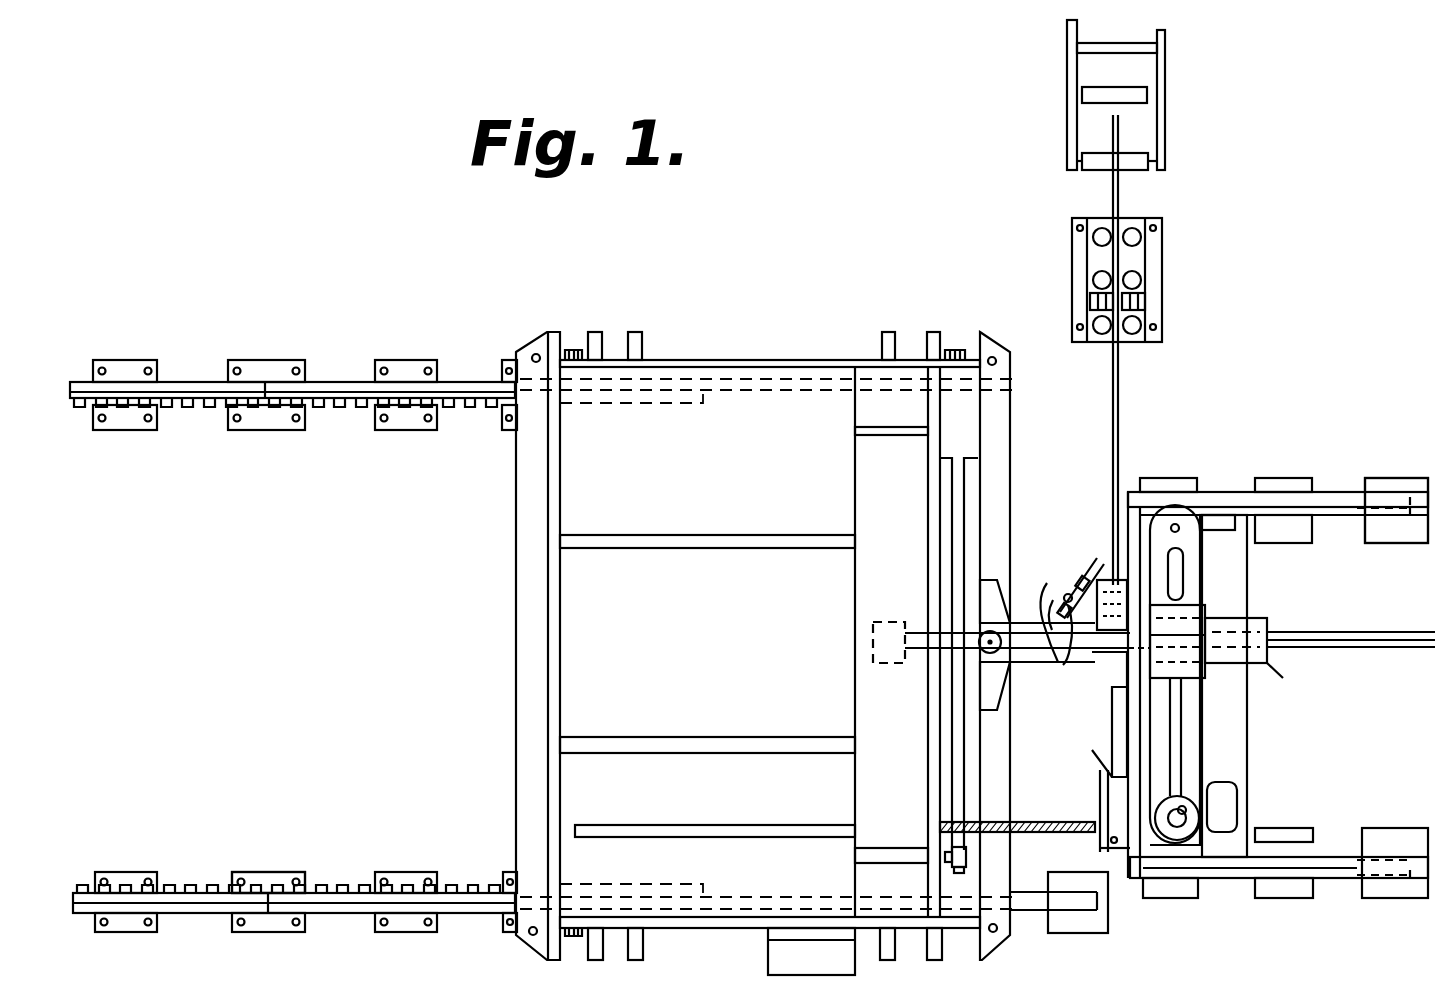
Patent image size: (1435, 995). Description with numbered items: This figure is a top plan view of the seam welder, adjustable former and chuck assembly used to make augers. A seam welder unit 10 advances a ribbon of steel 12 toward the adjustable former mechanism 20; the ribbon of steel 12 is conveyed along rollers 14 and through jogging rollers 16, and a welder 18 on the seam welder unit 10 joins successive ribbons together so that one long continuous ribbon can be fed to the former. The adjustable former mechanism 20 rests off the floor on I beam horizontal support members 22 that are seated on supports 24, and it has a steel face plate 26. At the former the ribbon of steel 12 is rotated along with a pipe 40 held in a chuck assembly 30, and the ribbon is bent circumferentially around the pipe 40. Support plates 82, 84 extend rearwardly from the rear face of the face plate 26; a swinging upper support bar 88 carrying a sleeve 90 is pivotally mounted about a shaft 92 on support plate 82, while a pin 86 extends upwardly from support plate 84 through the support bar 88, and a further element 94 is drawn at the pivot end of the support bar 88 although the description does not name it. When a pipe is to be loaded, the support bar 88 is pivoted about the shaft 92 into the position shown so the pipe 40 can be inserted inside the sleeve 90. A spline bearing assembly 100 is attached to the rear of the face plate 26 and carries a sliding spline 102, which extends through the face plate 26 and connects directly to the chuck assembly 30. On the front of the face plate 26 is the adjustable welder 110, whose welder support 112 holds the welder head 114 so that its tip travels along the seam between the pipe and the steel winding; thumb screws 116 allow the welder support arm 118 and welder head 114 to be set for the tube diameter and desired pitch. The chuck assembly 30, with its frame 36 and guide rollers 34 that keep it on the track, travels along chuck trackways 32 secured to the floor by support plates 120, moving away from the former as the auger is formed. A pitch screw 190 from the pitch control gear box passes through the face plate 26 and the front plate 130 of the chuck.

The seam welder unit 10 is at (1165, 250).
The ribbon of steel 12 is at (1122, 193).
The rollers 14 is at (1140, 158).
The jogging rollers 16 is at (1140, 290).
The welder 18 is at (1140, 303).
The adjustable former mechanism 20 is at (1303, 458).
The I beam horizontal support members 22 is at (1356, 527).
The supports 24 is at (1414, 478).
The face plate 26 is at (1134, 882).
The chuck assembly 30 is at (765, 333).
The chuck trackways 32 is at (195, 392).
The guide rollers 34 is at (572, 350).
The frame 36 is at (528, 531).
The pipe 40 is at (1062, 656).
The support plate 82 is at (1220, 845).
The support plate 84 is at (1214, 518).
The pin 86 is at (1182, 531).
The swinging upper support bar 88 is at (1196, 718).
The sleeve 90 is at (1196, 612).
The shaft 92 is at (1202, 830).
The roller 94 is at (1188, 813).
The spline bearing assembly 100 is at (1269, 665).
The sliding spline 102 is at (1426, 632).
The adjustable welder 110 is at (1038, 586).
The welder support 112 is at (1112, 550).
The welder head 114 is at (1056, 672).
The thumb screws 116 is at (1066, 575).
The welder support arm 118 is at (1081, 570).
The support plates 120 is at (300, 873).
The front plate 130 is at (944, 457).
The pitch screw 190 is at (1066, 815).